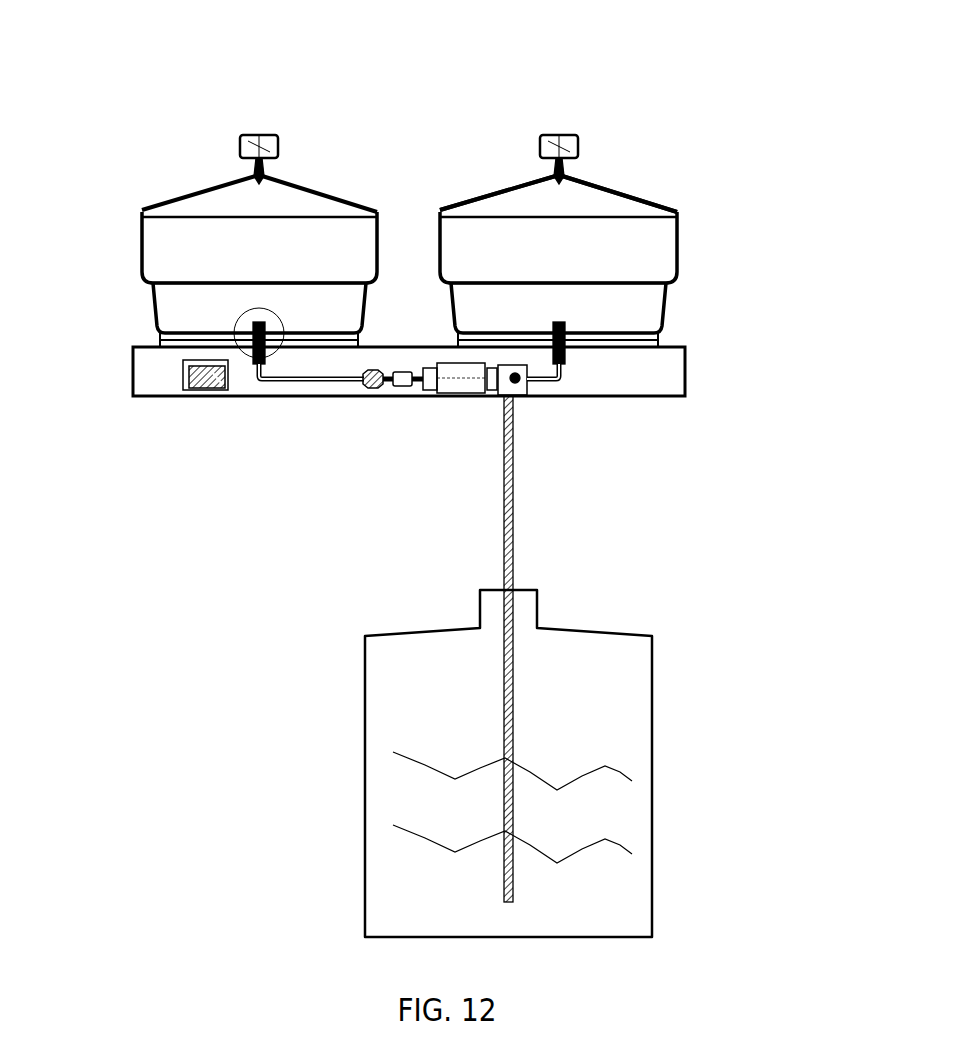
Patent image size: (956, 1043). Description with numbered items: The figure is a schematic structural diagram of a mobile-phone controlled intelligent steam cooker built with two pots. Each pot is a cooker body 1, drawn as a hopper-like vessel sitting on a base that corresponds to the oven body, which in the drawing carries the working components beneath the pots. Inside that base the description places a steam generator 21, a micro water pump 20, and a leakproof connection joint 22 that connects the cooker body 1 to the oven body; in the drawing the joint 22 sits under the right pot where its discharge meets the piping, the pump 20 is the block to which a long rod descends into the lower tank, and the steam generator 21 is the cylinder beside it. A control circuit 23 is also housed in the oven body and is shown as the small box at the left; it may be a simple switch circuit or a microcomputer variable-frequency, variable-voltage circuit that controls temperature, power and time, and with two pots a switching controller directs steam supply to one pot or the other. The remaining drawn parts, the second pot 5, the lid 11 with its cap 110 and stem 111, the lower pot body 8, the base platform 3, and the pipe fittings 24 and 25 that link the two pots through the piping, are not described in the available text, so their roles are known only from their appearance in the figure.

The cooker body 1 is at (642, 152).
The second hopper 5 is at (212, 241).
The lower hopper body 8 is at (649, 284).
The base platform 3 is at (490, 337).
The leakproof connection joint 22 is at (687, 265).
The control circuit 23 is at (167, 205).
The pipe connector 25 is at (322, 204).
The pipe joint 24 is at (392, 203).
The steam generator 21 is at (460, 207).
The micro water pump 20 is at (519, 208).
The handle cap 110 is at (575, 89).
The connecting stem 111 is at (619, 102).
The hopper lid 11 is at (592, 116).